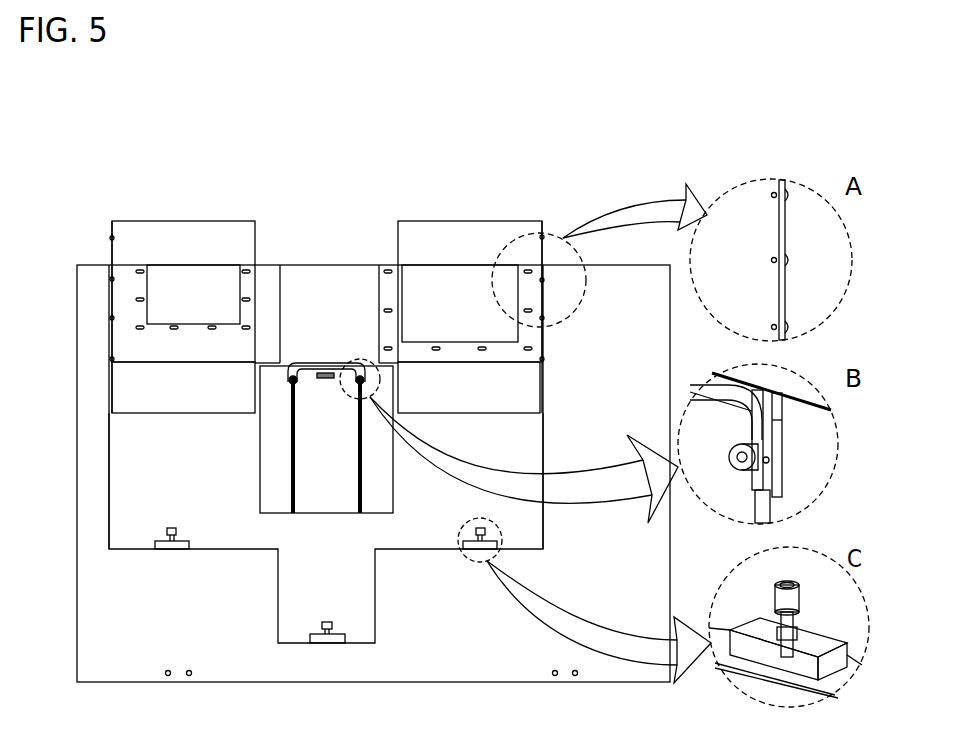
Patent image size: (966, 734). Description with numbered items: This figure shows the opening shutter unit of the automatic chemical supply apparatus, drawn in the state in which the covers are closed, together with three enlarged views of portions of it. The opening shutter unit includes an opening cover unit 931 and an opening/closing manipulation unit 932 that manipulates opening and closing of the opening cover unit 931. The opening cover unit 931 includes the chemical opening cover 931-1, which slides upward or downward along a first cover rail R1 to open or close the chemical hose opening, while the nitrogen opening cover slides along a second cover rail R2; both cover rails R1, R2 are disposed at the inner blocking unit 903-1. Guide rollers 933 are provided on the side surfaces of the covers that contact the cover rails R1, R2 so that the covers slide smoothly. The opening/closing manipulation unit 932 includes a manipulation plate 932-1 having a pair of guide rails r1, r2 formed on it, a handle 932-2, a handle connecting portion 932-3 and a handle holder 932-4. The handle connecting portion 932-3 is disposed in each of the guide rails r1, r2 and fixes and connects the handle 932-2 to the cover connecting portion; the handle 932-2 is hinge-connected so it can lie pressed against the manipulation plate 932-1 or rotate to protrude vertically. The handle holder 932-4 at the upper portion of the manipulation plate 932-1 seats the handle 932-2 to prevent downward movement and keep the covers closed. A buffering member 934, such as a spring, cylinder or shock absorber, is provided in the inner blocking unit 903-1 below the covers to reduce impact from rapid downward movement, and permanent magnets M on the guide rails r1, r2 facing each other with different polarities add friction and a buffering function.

The inner blocking unit 903-1 is at (300, 263).
The opening cover unit 931 is at (186, 203).
The chemical opening cover 931-1 is at (126, 220).
The opening/closing manipulation unit 932 is at (268, 401).
The manipulation plate 932-1 is at (260, 492).
The handle 932-2 is at (310, 363).
The handle connecting portion 932-3 is at (766, 450).
The handle holder 932-4 is at (330, 373).
The guide roller 933 is at (786, 260).
The buffering member 934 is at (468, 561).
The guide rail r1 is at (358, 477).
The guide rail r2 is at (293, 440).
The first cover rail R1 is at (545, 437).
The second cover rail R2 is at (108, 430).
The member M is at (766, 507).